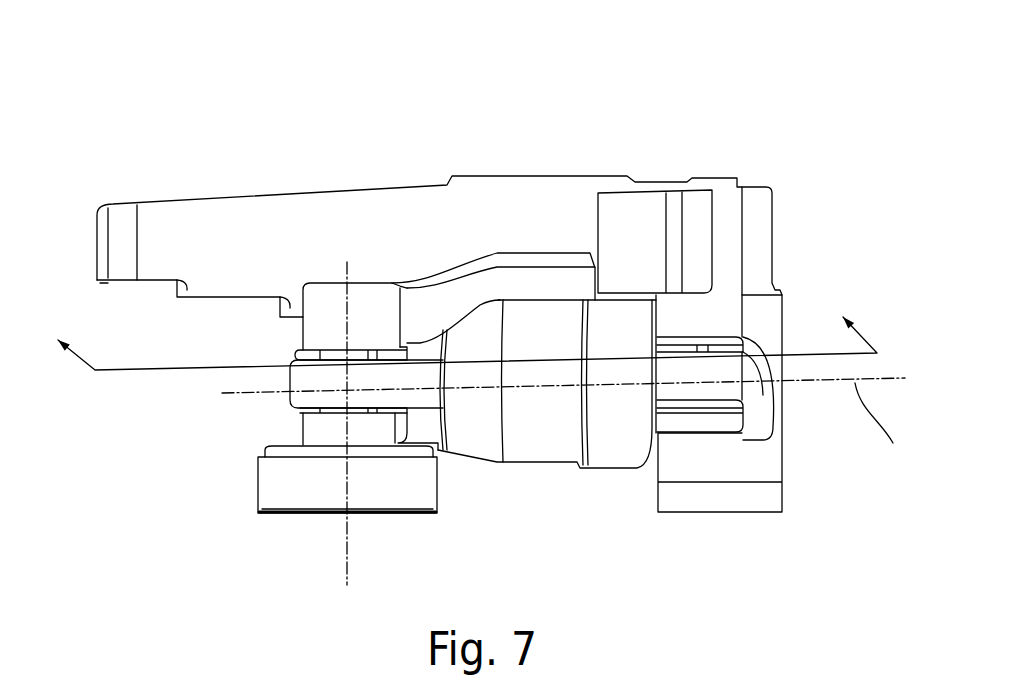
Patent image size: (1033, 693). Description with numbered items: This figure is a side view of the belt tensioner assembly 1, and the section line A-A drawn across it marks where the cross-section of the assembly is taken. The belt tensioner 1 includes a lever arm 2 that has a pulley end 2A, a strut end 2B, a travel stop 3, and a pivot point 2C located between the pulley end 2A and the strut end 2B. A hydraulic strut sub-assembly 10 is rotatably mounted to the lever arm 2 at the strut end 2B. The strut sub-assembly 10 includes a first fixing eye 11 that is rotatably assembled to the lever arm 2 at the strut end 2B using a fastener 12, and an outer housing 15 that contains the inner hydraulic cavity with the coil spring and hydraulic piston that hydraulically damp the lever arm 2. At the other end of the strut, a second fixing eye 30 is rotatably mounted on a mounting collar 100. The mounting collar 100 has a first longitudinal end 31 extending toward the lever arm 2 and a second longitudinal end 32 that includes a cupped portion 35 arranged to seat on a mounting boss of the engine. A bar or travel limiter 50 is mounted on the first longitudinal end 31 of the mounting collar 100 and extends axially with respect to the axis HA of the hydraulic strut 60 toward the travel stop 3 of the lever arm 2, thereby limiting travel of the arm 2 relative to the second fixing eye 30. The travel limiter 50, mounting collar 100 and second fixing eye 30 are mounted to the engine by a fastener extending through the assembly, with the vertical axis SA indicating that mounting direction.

The belt tensioner assembly 1 is at (510, 94).
The lever arm 2 is at (313, 205).
The pulley end 2A is at (163, 212).
The strut end 2B is at (698, 223).
The pivot point 2C is at (777, 427).
The travel stop 3 is at (635, 248).
The hydraulic strut sub-assembly 10 is at (524, 512).
The first fixing eye 11 is at (697, 382).
The fastener 12 is at (697, 425).
The outer housing 15 is at (498, 435).
The second fixing eye 30 is at (308, 383).
The first longitudinal end 31 is at (295, 352).
The second longitudinal end 32 is at (257, 477).
The cupped portion 35 is at (302, 517).
The travel limiter 50 is at (437, 307).
The hydraulic strut 60 is at (543, 442).
The mounting collar 100 is at (387, 502).